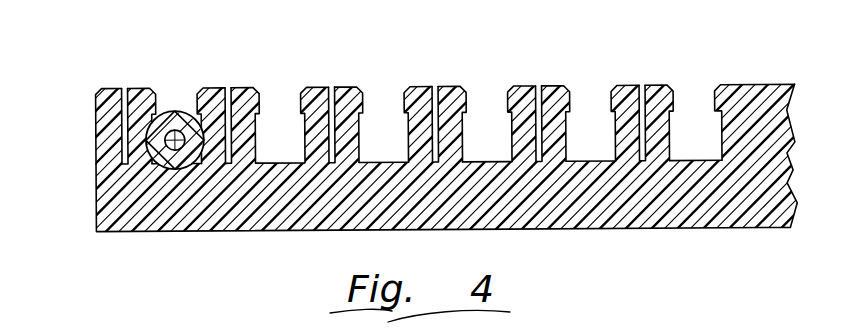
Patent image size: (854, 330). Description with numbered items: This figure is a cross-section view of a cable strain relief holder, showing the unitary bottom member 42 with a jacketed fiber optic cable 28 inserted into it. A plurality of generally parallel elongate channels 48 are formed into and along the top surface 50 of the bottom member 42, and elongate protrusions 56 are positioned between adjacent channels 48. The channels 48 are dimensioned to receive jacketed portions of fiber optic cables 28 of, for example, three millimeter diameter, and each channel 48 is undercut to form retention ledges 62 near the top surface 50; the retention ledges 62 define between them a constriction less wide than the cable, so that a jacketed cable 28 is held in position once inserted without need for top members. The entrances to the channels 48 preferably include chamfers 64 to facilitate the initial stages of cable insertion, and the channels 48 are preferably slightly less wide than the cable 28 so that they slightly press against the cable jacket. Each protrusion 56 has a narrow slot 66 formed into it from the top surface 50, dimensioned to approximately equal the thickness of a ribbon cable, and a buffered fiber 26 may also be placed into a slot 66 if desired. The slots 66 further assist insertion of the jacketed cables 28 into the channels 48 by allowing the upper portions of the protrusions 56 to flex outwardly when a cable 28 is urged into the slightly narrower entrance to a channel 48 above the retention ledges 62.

The bottom member 42 is at (218, 232).
The jacketed fiber optic cable 28 is at (196, 105).
The buffered fiber 26 is at (193, 145).
The elongate protrusion 56 is at (220, 88).
The narrow slot 66 is at (334, 91).
The chamfer 64 is at (360, 90).
The retention ledge 62 is at (503, 116).
The top surface 50 is at (552, 88).
The channel 48 is at (698, 142).